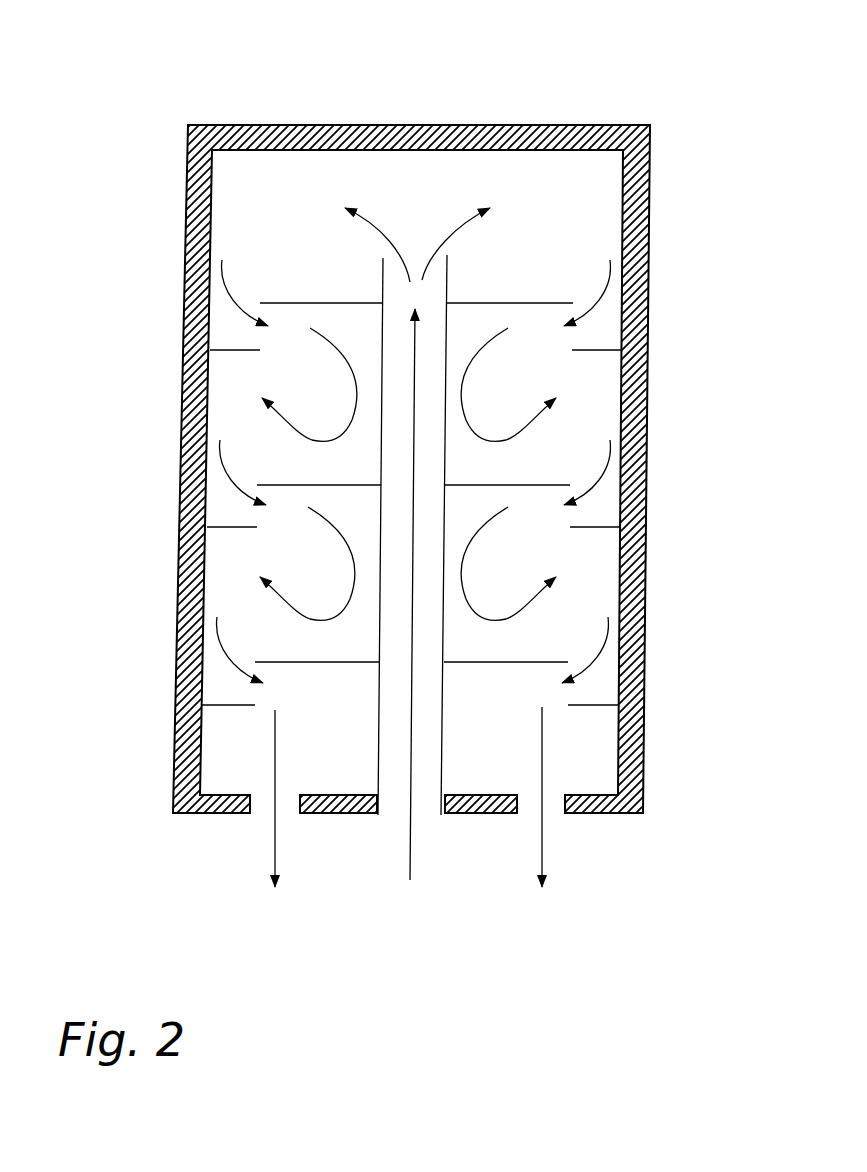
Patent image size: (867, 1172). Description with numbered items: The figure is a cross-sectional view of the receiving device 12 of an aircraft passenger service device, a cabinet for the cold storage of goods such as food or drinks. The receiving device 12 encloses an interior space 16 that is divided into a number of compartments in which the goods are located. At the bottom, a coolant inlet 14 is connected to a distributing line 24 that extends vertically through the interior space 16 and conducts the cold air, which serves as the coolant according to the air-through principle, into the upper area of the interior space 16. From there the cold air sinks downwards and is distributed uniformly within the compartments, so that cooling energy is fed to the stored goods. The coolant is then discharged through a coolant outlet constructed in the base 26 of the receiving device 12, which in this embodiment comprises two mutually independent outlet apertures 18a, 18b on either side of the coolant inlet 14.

The receiving device 12 is at (648, 125).
The coolant inlet 14 is at (392, 802).
The interior space 16 is at (540, 266).
The outlet aperture 18a is at (250, 815).
The outlet aperture 18b is at (563, 815).
The distributing line 24 is at (441, 707).
The base 26 is at (455, 815).